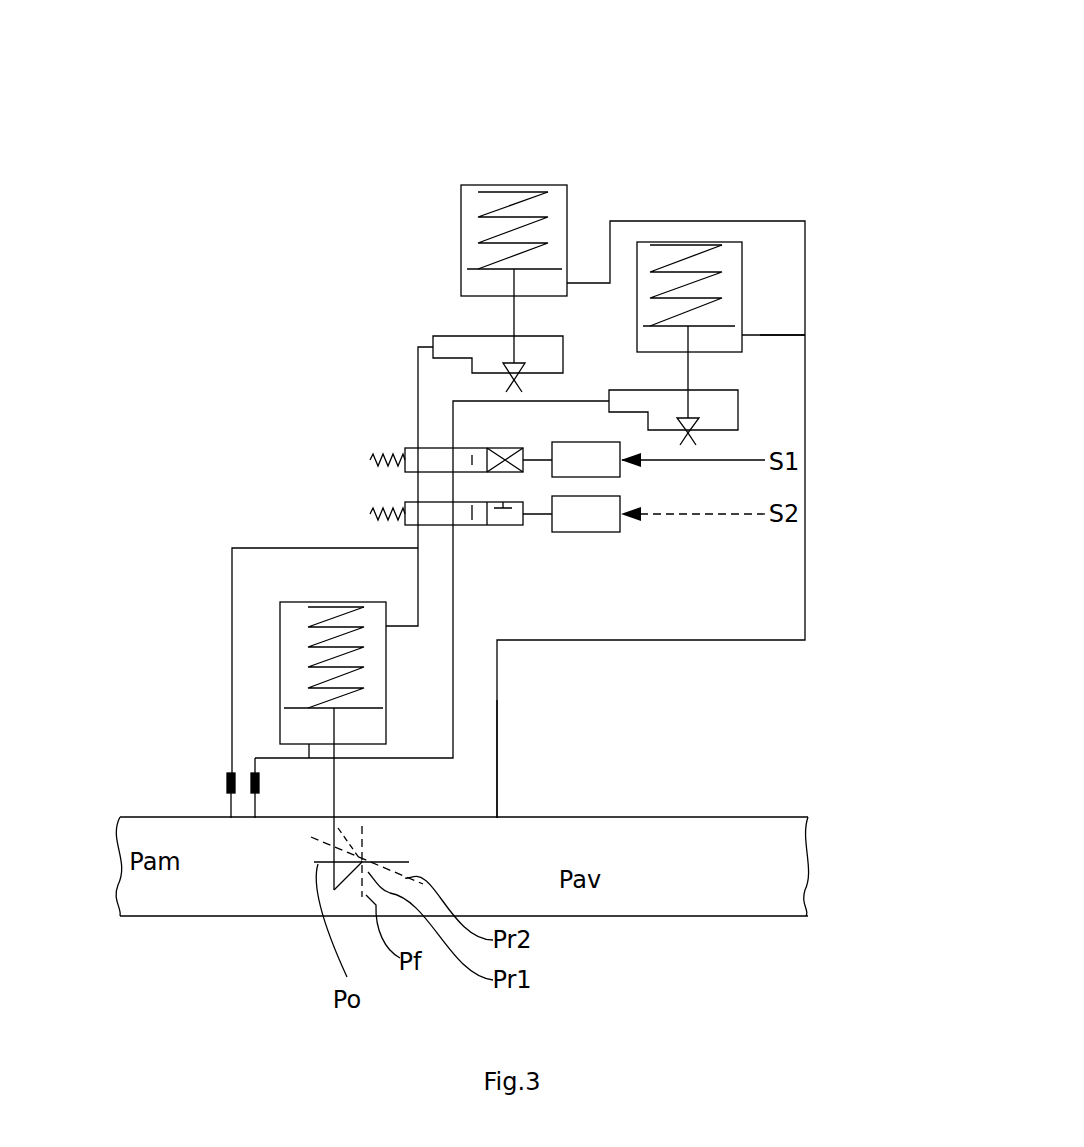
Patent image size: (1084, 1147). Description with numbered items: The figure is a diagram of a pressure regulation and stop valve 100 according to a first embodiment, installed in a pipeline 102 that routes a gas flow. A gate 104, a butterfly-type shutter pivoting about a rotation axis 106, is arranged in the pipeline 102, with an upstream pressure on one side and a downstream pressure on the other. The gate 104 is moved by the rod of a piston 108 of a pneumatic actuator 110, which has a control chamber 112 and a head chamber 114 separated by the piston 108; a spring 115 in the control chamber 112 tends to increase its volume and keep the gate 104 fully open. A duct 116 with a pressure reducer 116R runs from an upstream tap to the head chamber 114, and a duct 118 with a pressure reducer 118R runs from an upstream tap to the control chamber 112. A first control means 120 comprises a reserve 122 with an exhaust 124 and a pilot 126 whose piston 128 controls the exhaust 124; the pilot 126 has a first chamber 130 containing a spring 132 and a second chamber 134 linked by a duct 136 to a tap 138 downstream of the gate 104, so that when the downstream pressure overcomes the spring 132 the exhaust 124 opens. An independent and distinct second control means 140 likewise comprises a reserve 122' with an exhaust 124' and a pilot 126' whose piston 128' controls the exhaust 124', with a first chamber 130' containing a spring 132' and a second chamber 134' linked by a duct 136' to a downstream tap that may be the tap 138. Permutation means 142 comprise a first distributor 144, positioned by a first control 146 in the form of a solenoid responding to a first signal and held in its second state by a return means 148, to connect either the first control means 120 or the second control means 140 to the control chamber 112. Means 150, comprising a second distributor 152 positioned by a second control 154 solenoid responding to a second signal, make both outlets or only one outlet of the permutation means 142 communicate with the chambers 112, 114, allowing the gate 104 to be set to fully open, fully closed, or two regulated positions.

The pressure regulation and stop valve 100 is at (435, 128).
The pipeline 102 is at (745, 916).
The gate 104 is at (397, 860).
The rotation axis 106 is at (362, 866).
The piston 108 is at (298, 707).
The actuator 110 is at (282, 676).
The control chamber 112 is at (290, 622).
The head chamber 114 is at (288, 732).
The spring 115 is at (320, 603).
The duct 116 is at (290, 758).
The pressure reducer 116R is at (262, 784).
The duct 118 is at (230, 800).
The pressure reducer 118R is at (237, 793).
The first control means 120 is at (403, 264).
The reserve 122 is at (422, 354).
The reserve 122' is at (580, 574).
The exhaust 124 is at (560, 348).
The exhaust 124' is at (778, 506).
The pilot 126 is at (572, 109).
The pilot 126' is at (834, 220).
The piston 128 is at (450, 316).
The piston 128' is at (648, 372).
The first chamber 130 is at (450, 230).
The first chamber 130' is at (654, 239).
The spring 132 is at (458, 183).
The spring 132' is at (709, 198).
The second chamber 134 is at (410, 294).
The second chamber 134' is at (774, 365).
The duct 136 is at (842, 300).
The duct 136' is at (833, 336).
The tap 138 is at (497, 812).
The second control means 140 is at (762, 312).
The permutation means 142 is at (403, 443).
The first distributor 144 is at (427, 447).
The first control 146 is at (620, 480).
The return means 148 is at (372, 460).
The means 150 is at (490, 540).
The second distributor 152 is at (458, 527).
The second control 154 is at (607, 533).